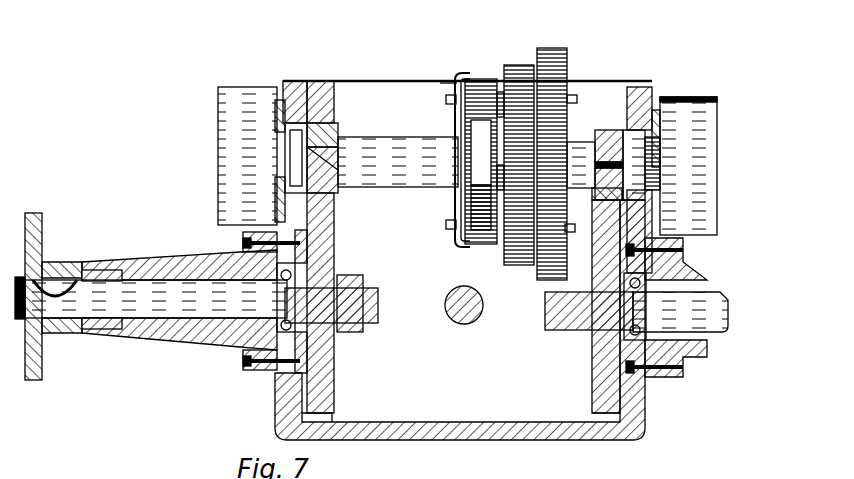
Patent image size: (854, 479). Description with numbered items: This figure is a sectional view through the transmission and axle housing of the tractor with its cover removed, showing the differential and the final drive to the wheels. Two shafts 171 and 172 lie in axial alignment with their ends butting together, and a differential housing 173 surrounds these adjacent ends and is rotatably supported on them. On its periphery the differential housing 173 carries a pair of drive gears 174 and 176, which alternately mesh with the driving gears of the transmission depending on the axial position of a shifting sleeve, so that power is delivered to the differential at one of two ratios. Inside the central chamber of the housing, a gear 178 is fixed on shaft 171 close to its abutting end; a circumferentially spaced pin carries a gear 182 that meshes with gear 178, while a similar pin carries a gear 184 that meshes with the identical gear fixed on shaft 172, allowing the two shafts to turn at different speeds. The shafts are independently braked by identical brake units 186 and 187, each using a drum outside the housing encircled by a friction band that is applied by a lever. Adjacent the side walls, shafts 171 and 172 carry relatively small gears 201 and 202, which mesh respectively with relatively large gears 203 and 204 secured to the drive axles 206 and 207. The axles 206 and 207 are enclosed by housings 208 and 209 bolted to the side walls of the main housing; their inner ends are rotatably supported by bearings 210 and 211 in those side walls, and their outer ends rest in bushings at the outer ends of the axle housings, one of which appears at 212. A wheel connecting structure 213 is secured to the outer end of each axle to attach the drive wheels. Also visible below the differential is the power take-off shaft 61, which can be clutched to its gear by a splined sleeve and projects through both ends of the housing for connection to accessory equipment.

The power take-off shaft 61 is at (472, 319).
The shaft 171 is at (338, 138).
The shaft 172 is at (603, 130).
The differential housing 173 is at (475, 77).
The drive gear 174 is at (518, 64).
The drive gear 176 is at (555, 47).
The gear 178 is at (470, 205).
The gear 182 is at (457, 246).
The gear 184 is at (500, 92).
The brake unit 186 is at (243, 86).
The brake unit 187 is at (687, 96).
The gear 201 is at (317, 125).
The gear 202 is at (597, 192).
The gear 203 is at (334, 225).
The gear 204 is at (593, 386).
The drive axle 206 is at (165, 288).
The drive axle 207 is at (712, 294).
The housing 208 is at (215, 252).
The housing 209 is at (698, 268).
The bearing 210 is at (278, 273).
The bearing 211 is at (642, 337).
The bushing 212 is at (103, 270).
The wheel connecting structure 213 is at (42, 228).